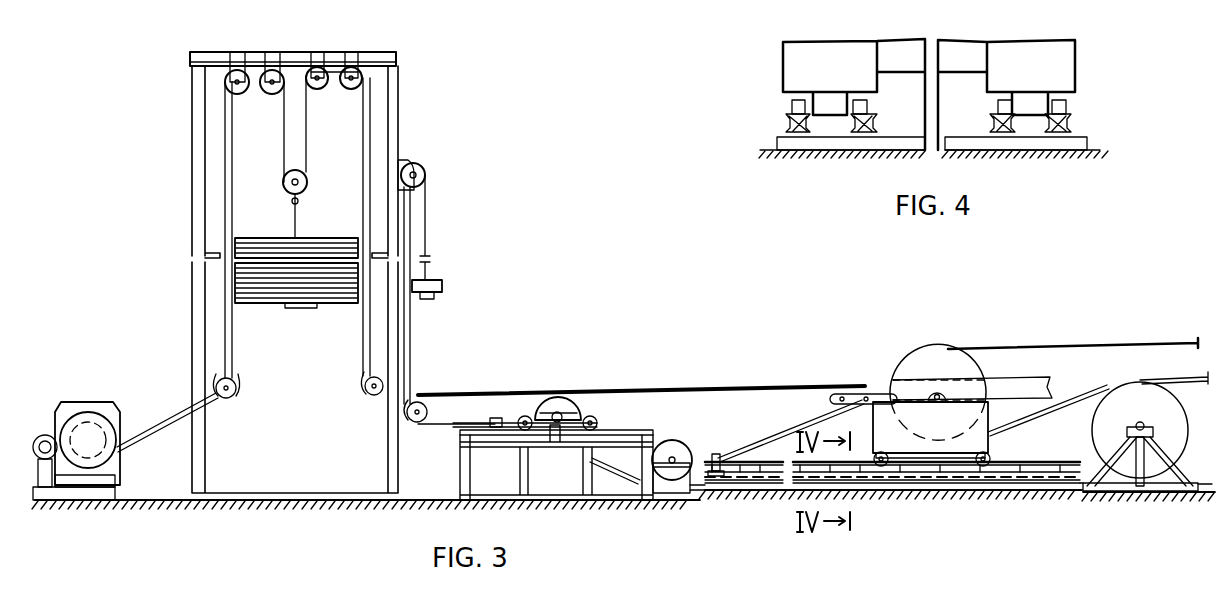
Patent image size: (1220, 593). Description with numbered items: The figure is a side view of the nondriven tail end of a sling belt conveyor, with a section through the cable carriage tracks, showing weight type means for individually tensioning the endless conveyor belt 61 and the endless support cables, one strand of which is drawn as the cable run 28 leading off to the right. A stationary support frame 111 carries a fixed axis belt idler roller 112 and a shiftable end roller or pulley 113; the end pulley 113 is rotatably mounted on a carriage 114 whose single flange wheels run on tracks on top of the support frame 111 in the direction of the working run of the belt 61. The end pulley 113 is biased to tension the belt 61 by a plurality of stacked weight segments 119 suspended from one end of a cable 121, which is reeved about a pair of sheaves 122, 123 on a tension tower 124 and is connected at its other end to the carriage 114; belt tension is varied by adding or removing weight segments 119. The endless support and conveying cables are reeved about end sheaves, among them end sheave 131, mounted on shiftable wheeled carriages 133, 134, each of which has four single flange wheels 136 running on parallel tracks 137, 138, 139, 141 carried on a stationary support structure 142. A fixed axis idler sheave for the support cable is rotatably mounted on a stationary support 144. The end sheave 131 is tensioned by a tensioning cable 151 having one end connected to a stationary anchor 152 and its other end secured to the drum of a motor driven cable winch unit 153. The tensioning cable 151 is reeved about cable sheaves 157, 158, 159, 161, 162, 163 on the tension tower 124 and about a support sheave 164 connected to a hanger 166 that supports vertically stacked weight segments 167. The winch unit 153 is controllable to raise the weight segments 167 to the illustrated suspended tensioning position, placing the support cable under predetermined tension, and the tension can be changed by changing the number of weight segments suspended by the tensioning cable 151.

In FIG. 3, the tension tower 124 is at (206, 60).
In FIG. 3, the cable sheave 158 is at (363, 82).
In FIG. 3, the cable sheave 161 is at (269, 94).
In FIG. 3, the cable sheave 159 is at (323, 90).
In FIG. 3, the cable sheave 162 is at (237, 94).
In FIG. 3, the support sheave 164 is at (307, 184).
In FIG. 3, the hanger 166 is at (299, 217).
In FIG. 3, the weight segments 167 is at (262, 246).
In FIG. 3, the sheave 122 is at (422, 163).
In FIG. 3, the cable 121 is at (432, 258).
In FIG. 3, the weight segments 119 is at (443, 285).
In FIG. 3, the cable sheave 157 is at (370, 398).
In FIG. 3, the cable sheave 163 is at (234, 397).
In FIG. 3, the motor driven cable winch unit 153 is at (85, 406).
In FIG. 3, the tensioning cable 151 is at (172, 415).
In FIG. 3, the sheave 123 is at (442, 406).
In FIG. 3, the stationary support frame 111 is at (460, 468).
In FIG. 3, the carriage 114 is at (522, 405).
In FIG. 3, the end roller or pulley 113 is at (572, 408).
In FIG. 3, the belt idler roller 112 is at (668, 440).
In FIG. 3, the endless conveyor belt 61 is at (632, 464).
In FIG. 3, the stationary anchor 152 is at (720, 453).
In FIG. 3, the wheeled carriage 133 is at (905, 398).
In FIG. 4, the wheeled carriage 133 is at (1062, 50).
In FIG. 3, the end sheave 131 is at (938, 351).
In FIG. 3, the single flange wheels 136 is at (972, 437).
In FIG. 3, the track 137 is at (1020, 462).
In FIG. 4, the track 137 is at (1073, 112).
In FIG. 4, the track 138 is at (989, 116).
In FIG. 4, the track 139 is at (870, 118).
In FIG. 4, the track 141 is at (786, 118).
In FIG. 3, the stationary support structure 142 is at (1095, 444).
In FIG. 4, the stationary support structure 142 is at (777, 146).
In FIG. 3, the stationary support 144 is at (1168, 429).
In FIG. 4, the wheeled carriage 134 is at (795, 56).
In FIG. 3, the veneer strip 28 is at (1102, 349).